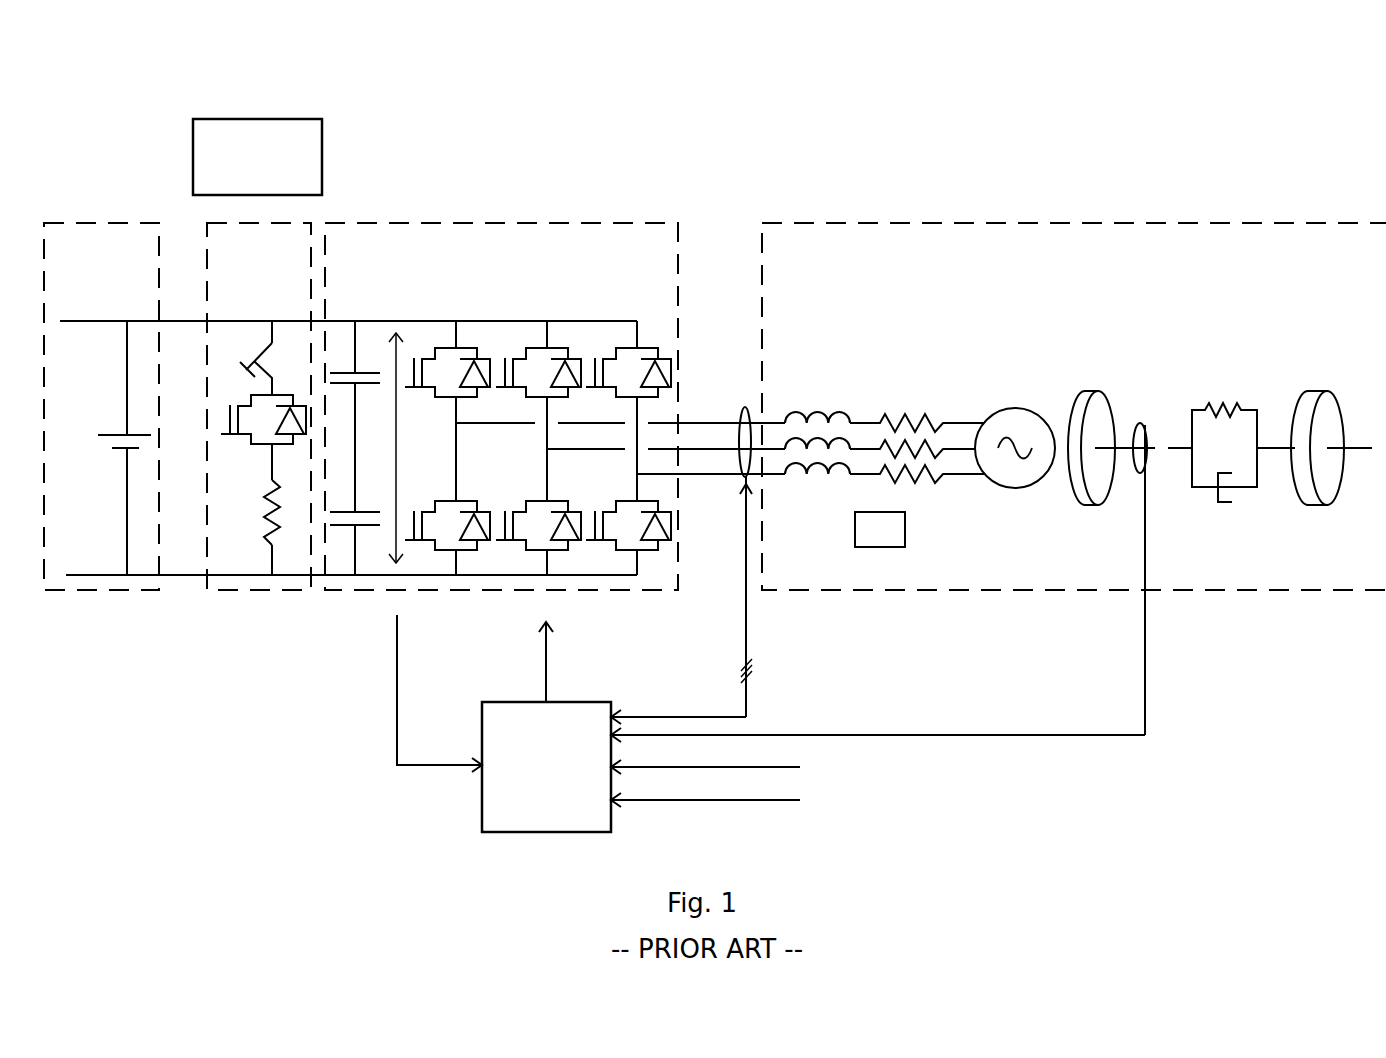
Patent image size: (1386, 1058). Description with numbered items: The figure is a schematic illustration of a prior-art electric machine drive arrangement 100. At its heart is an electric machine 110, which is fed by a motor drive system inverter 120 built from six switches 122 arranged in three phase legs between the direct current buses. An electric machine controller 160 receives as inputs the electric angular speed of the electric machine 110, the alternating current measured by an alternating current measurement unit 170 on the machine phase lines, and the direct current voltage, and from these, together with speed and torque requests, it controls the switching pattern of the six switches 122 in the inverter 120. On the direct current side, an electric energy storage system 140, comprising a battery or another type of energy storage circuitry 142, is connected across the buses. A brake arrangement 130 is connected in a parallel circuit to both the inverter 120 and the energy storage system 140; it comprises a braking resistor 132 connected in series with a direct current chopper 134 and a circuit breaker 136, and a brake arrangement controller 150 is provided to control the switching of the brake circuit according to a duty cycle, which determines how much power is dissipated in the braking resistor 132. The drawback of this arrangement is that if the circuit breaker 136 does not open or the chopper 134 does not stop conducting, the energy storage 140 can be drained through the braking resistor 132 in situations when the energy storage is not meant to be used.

The electric machine drive arrangement 100 is at (366, 95).
The electric machine 110 is at (1056, 257).
The motor drive system inverter 120 is at (481, 257).
The switches 122 is at (558, 345).
The brake arrangement 130 is at (239, 257).
The braking resistor 132 is at (263, 492).
The direct current chopper 134 is at (252, 435).
The circuit breaker 136 is at (266, 355).
The electric energy storage system 140 is at (81, 257).
The energy storage circuitry 142 is at (110, 440).
The brake arrangement controller 150 is at (237, 169).
The electric machine controller 160 is at (525, 780).
The alternating current measurement unit 170 is at (742, 477).